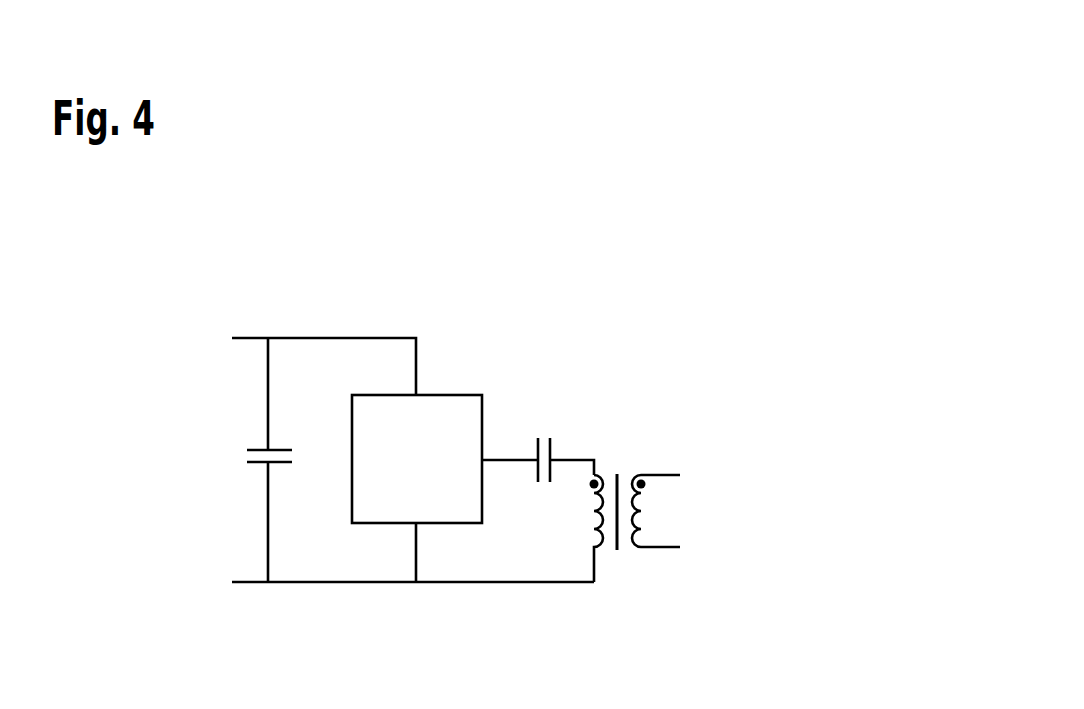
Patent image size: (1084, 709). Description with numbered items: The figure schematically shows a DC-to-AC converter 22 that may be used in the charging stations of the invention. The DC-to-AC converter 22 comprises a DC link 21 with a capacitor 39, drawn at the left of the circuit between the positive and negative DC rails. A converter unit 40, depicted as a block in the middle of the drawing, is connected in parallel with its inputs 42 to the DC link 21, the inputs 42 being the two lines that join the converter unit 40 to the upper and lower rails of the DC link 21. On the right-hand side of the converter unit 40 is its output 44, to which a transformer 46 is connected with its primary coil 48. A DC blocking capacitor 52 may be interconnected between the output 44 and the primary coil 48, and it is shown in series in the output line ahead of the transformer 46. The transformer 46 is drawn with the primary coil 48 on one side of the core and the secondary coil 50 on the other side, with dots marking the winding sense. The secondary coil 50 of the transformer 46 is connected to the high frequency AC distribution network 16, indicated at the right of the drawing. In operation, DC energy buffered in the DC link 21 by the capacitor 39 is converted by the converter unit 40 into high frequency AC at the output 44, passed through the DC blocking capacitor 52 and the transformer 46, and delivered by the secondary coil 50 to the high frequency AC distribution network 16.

The high frequency AC distribution network 16 is at (846, 454).
The DC link 21 is at (219, 288).
The DC-to-AC converter 22 is at (779, 281).
The capacitor 39 is at (260, 449).
The converter unit 40 is at (452, 395).
The inputs 42 is at (415, 367).
The output 44 is at (508, 457).
The transformer 46 is at (644, 434).
The primary coil 48 is at (607, 550).
The secondary coil 50 is at (636, 505).
The DC blocking capacitor 52 is at (552, 447).